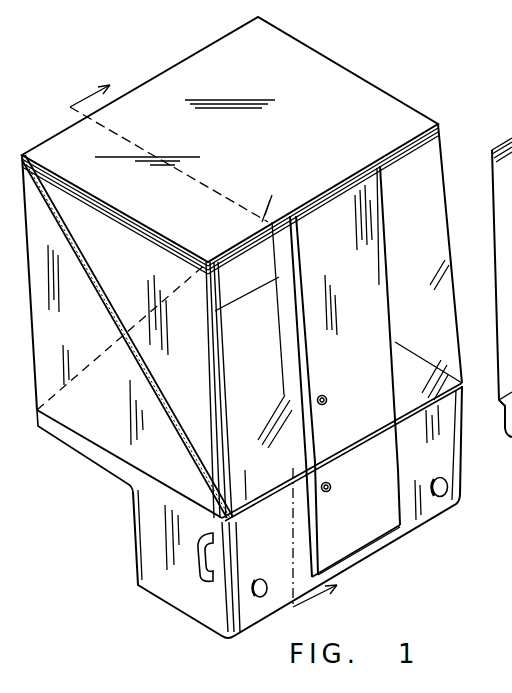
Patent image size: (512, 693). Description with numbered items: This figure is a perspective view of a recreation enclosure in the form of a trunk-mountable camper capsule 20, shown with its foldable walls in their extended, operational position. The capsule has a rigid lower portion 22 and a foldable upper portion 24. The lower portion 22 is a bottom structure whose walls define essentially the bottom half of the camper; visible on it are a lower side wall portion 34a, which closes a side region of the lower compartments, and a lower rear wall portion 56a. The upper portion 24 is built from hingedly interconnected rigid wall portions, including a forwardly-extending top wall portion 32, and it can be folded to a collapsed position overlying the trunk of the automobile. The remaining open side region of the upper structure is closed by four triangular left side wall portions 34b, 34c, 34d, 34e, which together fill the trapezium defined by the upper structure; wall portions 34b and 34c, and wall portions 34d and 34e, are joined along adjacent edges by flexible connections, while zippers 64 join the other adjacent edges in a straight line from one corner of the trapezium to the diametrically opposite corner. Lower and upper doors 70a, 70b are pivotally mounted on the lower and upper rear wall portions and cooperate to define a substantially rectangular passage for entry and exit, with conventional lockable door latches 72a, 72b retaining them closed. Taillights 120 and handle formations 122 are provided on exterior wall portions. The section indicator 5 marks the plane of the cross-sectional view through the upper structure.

The camper capsule 20 is at (486, 133).
The lower portion 22 is at (118, 530).
The upper portion 24 is at (318, 42).
The top wall portion 32 is at (388, 110).
The lower side wall portion 34a is at (155, 572).
The left side wall portion 34b is at (122, 327).
The left side wall portion 34c is at (172, 323).
The left side wall portion 34d is at (111, 412).
The left side wall portion 34e is at (71, 354).
The lower rear wall portion 56a is at (420, 518).
The zippers 64 is at (160, 400).
The lower door 70a is at (395, 460).
The upper door 70b is at (372, 273).
The door latch 72a is at (331, 490).
The door latch 72b is at (328, 402).
The taillights 120 is at (266, 580).
The handle formations 122 is at (195, 590).
The section line 5- 5 is at (207, 342).